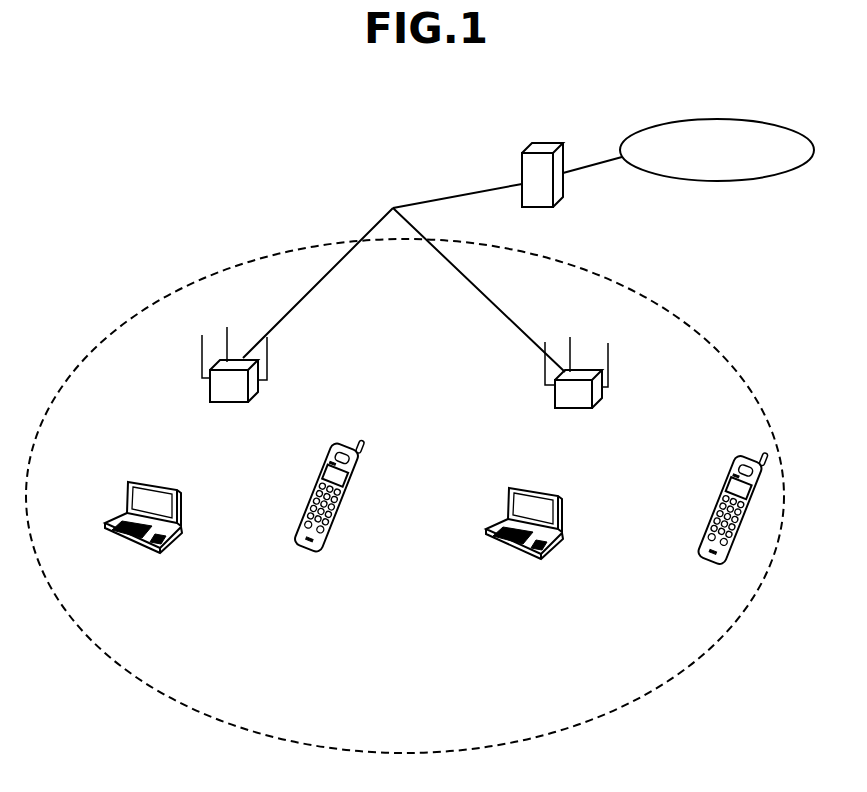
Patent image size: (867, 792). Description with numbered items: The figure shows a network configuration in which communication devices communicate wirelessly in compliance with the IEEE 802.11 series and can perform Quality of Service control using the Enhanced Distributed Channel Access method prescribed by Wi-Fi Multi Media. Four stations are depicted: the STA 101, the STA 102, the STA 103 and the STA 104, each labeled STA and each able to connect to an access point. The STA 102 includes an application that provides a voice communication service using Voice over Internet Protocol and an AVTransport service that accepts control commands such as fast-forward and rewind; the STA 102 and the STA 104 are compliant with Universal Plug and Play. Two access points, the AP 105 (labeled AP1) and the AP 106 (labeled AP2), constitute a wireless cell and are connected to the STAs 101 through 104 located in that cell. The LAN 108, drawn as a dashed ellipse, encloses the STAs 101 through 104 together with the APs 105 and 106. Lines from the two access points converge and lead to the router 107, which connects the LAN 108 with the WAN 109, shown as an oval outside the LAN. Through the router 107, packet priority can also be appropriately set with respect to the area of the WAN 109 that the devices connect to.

The station 101 is at (148, 483).
The station 102 is at (343, 442).
The station 103 is at (524, 487).
The station 104 is at (735, 471).
The access point 105 is at (214, 335).
The access point 106 is at (590, 343).
The router 107 is at (543, 143).
The LAN 108 is at (170, 292).
The WAN 109 is at (718, 119).